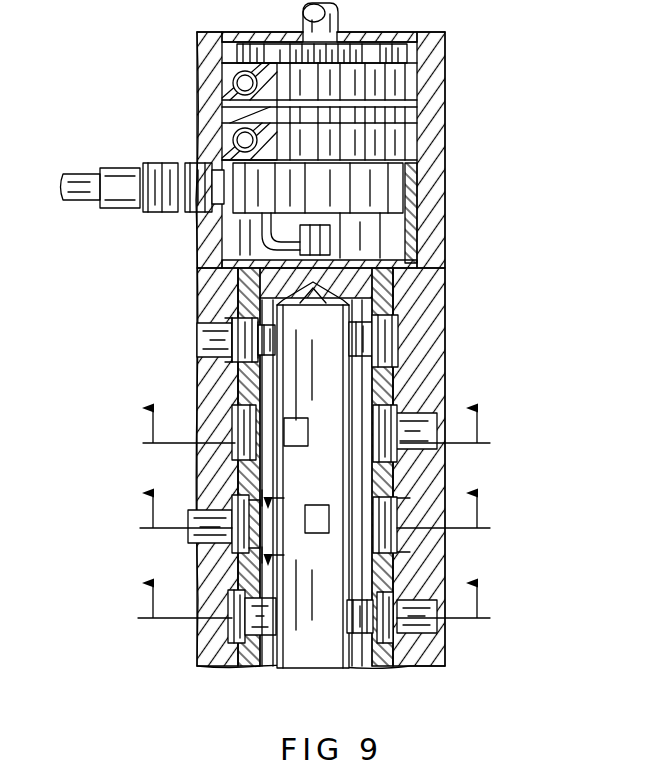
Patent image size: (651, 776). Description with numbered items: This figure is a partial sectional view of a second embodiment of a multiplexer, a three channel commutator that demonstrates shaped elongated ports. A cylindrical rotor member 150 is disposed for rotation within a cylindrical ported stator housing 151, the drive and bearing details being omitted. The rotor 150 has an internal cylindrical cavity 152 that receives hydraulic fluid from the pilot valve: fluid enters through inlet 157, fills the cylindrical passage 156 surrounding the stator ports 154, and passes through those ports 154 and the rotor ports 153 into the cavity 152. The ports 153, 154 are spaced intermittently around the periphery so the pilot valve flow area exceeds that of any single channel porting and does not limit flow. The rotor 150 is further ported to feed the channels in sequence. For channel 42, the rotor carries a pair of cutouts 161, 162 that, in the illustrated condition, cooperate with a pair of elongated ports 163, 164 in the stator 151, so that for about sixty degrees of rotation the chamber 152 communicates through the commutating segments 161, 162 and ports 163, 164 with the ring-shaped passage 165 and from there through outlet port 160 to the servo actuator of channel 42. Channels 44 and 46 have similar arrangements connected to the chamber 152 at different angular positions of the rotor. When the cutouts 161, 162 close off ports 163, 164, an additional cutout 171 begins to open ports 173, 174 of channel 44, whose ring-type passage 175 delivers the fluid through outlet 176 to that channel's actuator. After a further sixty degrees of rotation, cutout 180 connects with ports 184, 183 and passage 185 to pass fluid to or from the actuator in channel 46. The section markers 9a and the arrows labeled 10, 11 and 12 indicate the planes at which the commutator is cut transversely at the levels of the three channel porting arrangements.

The section line 9a is at (287, 527).
The section line 10 is at (316, 621).
The section line 11 is at (317, 531).
The section line 12 is at (317, 442).
The channel 42 is at (593, 623).
The channel 44 is at (28, 526).
The channel 46 is at (493, 433).
The rotor member 150 is at (395, 300).
The ported stator housing 151 is at (235, 356).
The internal cylindrical cavity 152 is at (313, 475).
The ports 153 is at (238, 318).
The ports 154 is at (236, 337).
The cylindrical passage 156 is at (262, 341).
The inlet 157 is at (205, 328).
The outlet port 160 is at (440, 606).
The cutout 161 is at (270, 666).
The cutout 162 is at (363, 640).
The elongated port 163 is at (230, 640).
The elongated port 164 is at (385, 660).
The ring-shaped passage 165 is at (240, 645).
The cutout 171 is at (308, 505).
The port 173 is at (232, 528).
The port 174 is at (400, 516).
The ring-type passage 175 is at (240, 549).
The outlet 176 is at (195, 518).
The cutout 180 is at (297, 418).
The port 183 is at (235, 455).
The port 184 is at (400, 345).
The passage 185 is at (425, 420).